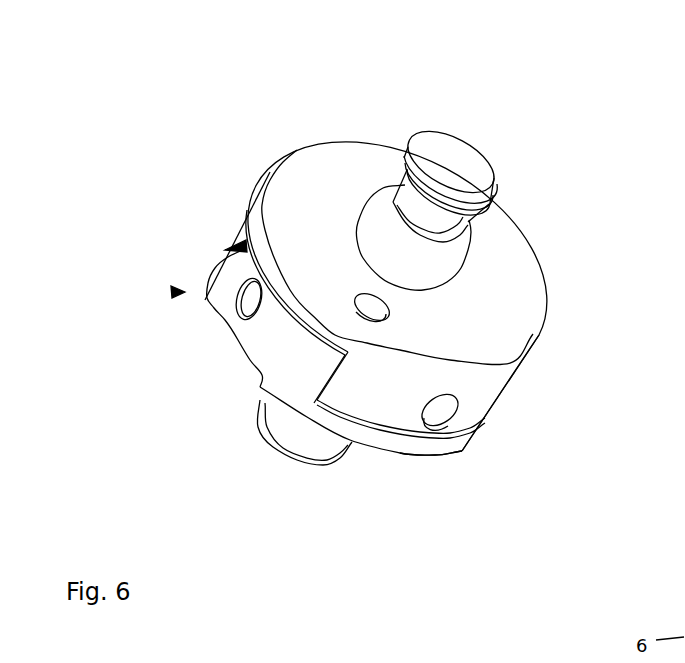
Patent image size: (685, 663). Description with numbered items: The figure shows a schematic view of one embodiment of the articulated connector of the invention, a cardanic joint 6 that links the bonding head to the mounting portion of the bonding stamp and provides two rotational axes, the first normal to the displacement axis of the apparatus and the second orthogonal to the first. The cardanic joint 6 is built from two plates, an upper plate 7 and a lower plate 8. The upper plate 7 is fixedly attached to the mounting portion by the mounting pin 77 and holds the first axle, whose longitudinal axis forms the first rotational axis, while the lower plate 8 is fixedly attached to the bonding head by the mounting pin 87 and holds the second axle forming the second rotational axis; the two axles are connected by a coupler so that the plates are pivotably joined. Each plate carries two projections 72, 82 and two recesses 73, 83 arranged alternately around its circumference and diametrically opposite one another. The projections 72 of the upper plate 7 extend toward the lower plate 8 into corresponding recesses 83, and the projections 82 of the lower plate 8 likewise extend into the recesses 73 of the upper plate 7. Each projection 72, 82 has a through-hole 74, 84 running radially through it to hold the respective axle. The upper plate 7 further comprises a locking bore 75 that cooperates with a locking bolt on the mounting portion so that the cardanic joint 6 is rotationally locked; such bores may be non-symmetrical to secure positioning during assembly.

The cardanic joint 6 is at (176, 292).
The upper plate 7 is at (292, 145).
The lower plate 8 is at (403, 445).
The projection 72 is at (485, 383).
The recess 73 is at (230, 247).
The through-hole 74 is at (448, 434).
The locking bore 75 is at (388, 306).
The mounting pin 77 is at (457, 160).
The projection 82 is at (262, 374).
The recess 83 is at (423, 447).
The through-hole 84 is at (245, 317).
The mounting pin 87 is at (290, 435).